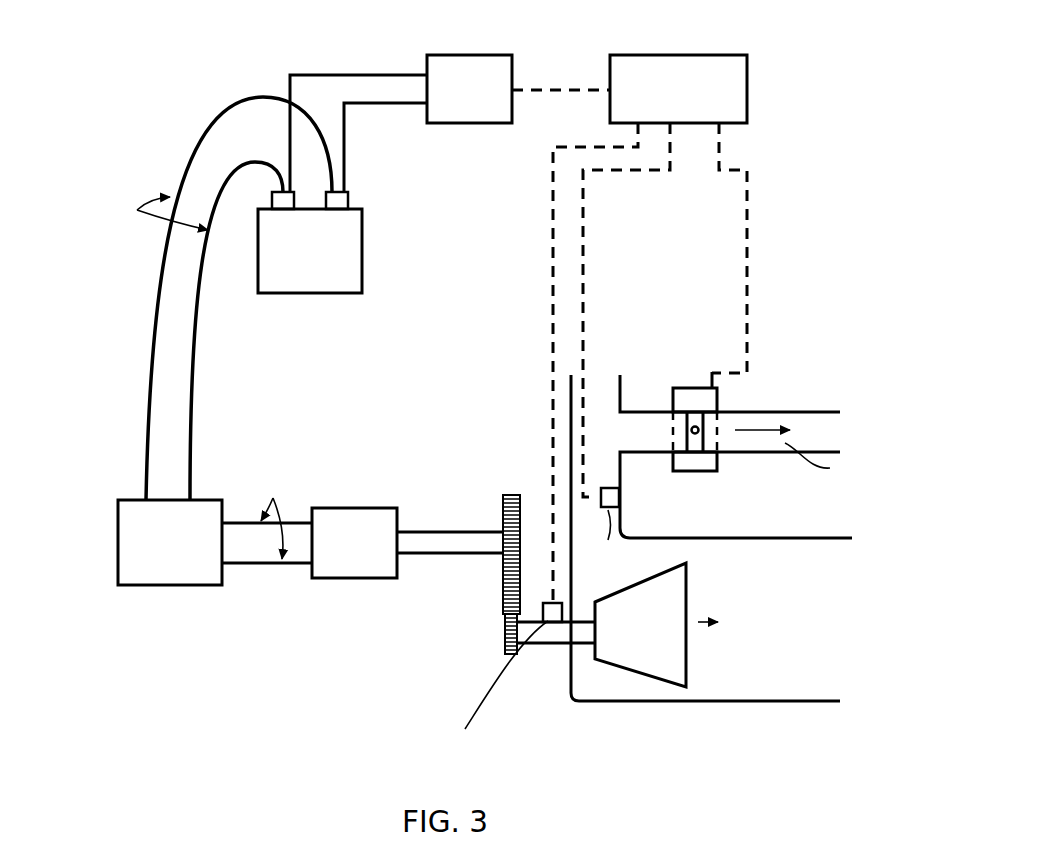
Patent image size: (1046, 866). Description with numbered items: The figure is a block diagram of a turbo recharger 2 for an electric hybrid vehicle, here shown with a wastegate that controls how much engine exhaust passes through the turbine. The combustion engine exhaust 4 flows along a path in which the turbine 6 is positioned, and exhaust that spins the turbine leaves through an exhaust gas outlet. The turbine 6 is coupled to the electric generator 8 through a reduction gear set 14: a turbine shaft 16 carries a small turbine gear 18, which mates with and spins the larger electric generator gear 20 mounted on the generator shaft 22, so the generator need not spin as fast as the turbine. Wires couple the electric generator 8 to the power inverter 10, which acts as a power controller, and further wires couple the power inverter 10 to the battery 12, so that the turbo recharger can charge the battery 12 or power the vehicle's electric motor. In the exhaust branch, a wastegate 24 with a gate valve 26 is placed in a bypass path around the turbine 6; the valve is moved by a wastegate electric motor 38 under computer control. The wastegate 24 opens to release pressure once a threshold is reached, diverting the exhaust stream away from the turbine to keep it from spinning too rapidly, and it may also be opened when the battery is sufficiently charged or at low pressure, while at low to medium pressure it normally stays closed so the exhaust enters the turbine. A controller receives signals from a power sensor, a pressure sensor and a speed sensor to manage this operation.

The turbo recharger 2 is at (184, 42).
The exhaust 4 is at (608, 376).
The turbine 6 is at (652, 683).
The electric generator 8 is at (349, 583).
The power inverter 10 is at (165, 589).
The battery 12 is at (310, 296).
The reduction gear set 14 is at (478, 540).
The turbine shaft 16 is at (547, 649).
The turbine gear 18 is at (500, 655).
The electric generator gear 20 is at (510, 492).
The generator shaft 22 is at (433, 529).
The wastegate 24 is at (695, 475).
The gate valve 26 is at (687, 397).
The wastegate electric motor 38 is at (725, 396).